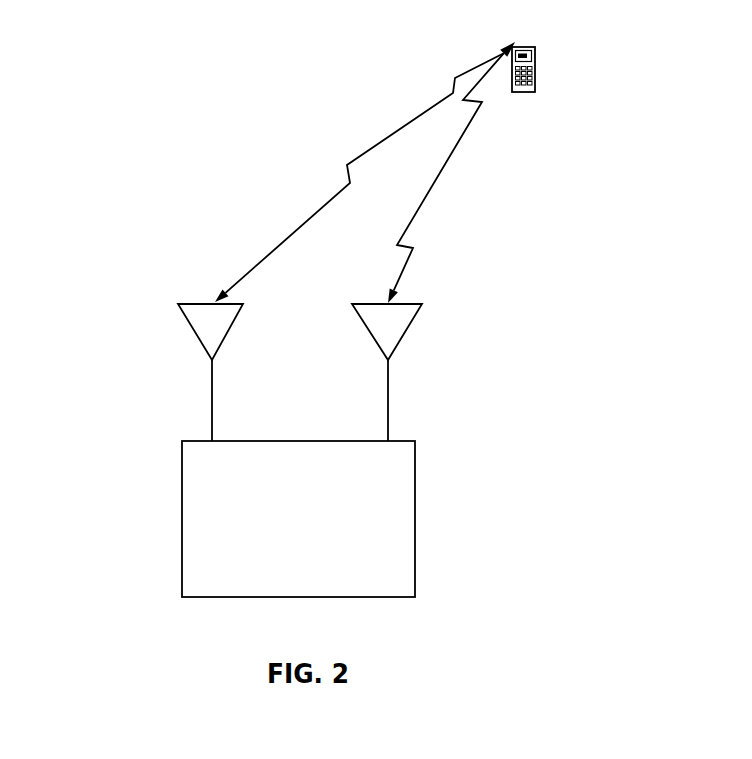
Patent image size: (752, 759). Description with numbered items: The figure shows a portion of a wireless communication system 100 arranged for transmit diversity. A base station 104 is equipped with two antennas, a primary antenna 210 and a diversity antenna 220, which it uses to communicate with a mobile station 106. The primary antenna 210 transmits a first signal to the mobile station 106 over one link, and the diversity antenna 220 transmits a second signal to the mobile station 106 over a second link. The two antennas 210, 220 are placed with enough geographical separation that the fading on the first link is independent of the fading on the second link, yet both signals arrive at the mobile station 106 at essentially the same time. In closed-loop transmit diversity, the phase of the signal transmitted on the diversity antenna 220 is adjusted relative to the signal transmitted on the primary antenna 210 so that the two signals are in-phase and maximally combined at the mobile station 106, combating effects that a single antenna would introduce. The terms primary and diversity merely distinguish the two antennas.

The system 100 is at (91, 530).
The base station 104 is at (260, 441).
The mobile station 106 is at (528, 46).
The primary antenna 210 is at (228, 334).
The diversity antenna 220 is at (405, 334).